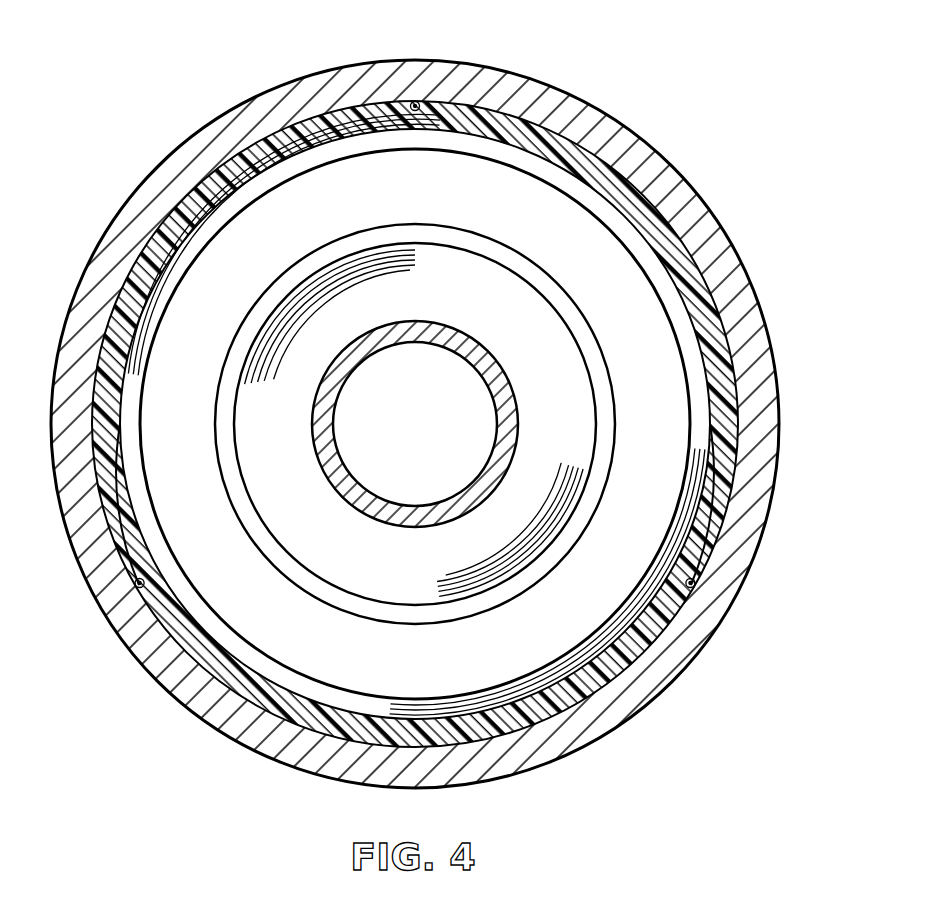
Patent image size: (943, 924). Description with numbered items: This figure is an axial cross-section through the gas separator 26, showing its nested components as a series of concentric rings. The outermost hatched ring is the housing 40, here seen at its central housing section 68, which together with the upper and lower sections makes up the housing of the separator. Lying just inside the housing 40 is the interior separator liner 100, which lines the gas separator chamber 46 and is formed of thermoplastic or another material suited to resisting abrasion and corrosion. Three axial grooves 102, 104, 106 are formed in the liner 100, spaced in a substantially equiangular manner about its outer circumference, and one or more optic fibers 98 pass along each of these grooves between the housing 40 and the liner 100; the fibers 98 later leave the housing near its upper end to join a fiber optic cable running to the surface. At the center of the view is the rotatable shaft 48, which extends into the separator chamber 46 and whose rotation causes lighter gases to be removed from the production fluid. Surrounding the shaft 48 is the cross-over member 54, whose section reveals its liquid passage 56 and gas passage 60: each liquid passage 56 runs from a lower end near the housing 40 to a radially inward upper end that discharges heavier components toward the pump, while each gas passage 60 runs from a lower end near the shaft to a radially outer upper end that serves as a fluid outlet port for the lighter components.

The gas separator 26 is at (415, 424).
The housing 40 is at (446, 404).
The gas separator chamber 46 is at (633, 405).
The rotatable shaft 48 is at (325, 465).
The cross-over member 54 is at (213, 423).
The liquid passage 56 is at (600, 222).
The gas passage 60 is at (572, 345).
The central housing section 68 is at (727, 222).
The optic fiber 98 is at (421, 102).
The interior separator liner 100 is at (238, 175).
The axial groove 102 is at (142, 580).
The axial groove 104 is at (685, 580).
The axial groove 106 is at (384, 124).